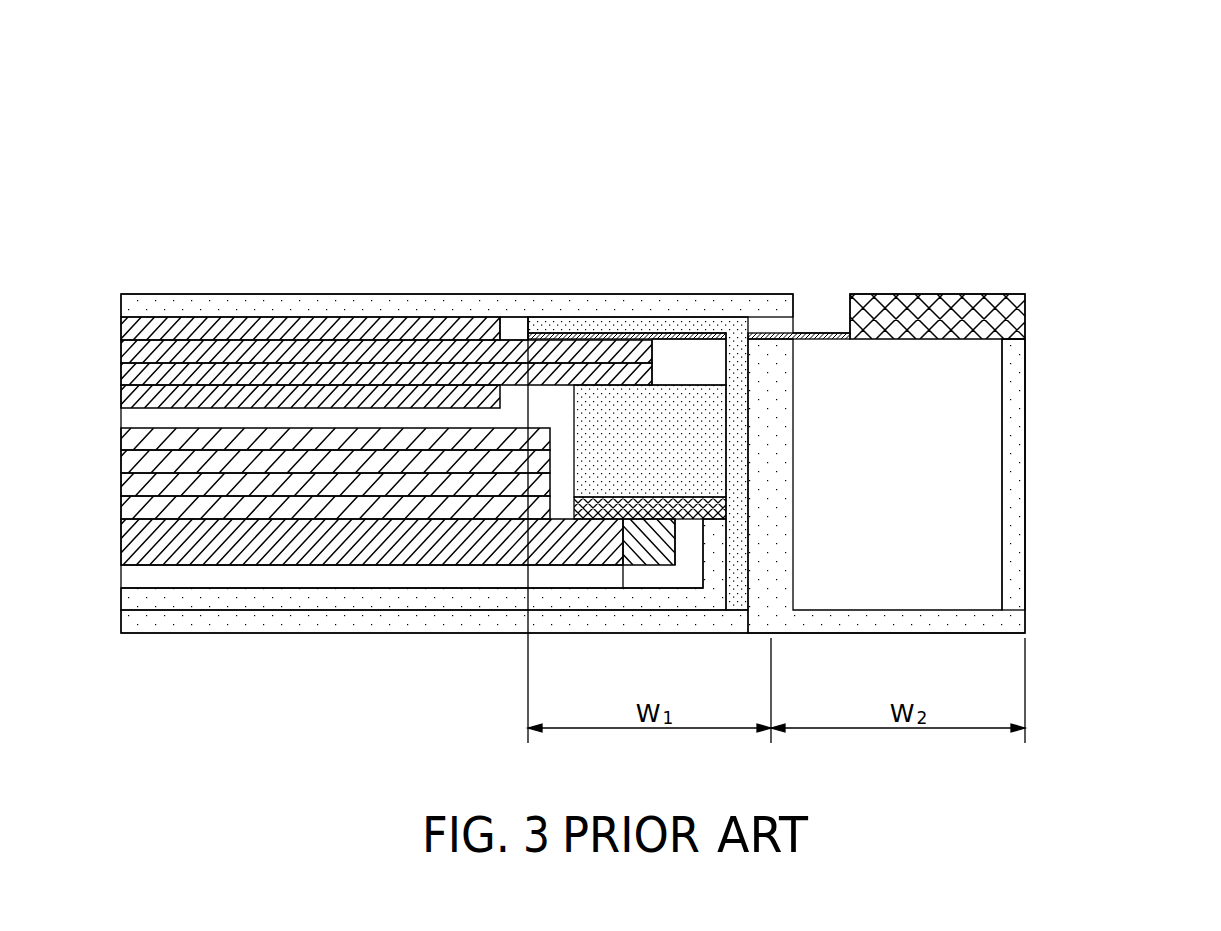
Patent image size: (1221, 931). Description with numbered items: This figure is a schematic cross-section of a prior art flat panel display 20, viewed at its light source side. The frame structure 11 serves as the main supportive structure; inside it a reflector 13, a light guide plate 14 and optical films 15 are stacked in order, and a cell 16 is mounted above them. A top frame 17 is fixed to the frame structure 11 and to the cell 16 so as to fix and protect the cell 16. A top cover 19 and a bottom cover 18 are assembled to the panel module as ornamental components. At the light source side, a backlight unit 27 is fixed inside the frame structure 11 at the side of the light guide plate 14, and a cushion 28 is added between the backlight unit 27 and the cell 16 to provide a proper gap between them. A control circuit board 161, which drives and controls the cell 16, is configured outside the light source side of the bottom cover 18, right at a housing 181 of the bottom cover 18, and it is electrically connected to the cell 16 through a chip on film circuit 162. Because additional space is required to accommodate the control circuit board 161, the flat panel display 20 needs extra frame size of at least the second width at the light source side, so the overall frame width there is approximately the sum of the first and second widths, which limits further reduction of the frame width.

The frame structure 11 is at (463, 601).
The reflector 13 is at (358, 577).
The light guide plate 14 is at (287, 548).
The optical films 15 is at (223, 508).
The cell 16 is at (308, 368).
The top frame 17 is at (647, 317).
The bottom cover 18 is at (860, 633).
The top cover 19 is at (445, 302).
The flat panel display 20 is at (1110, 150).
The backlight unit 27 is at (653, 565).
The cushion 28 is at (690, 390).
The control circuit board 161 is at (942, 294).
The chip on film circuit 162 is at (822, 333).
The housing 181 is at (1018, 406).